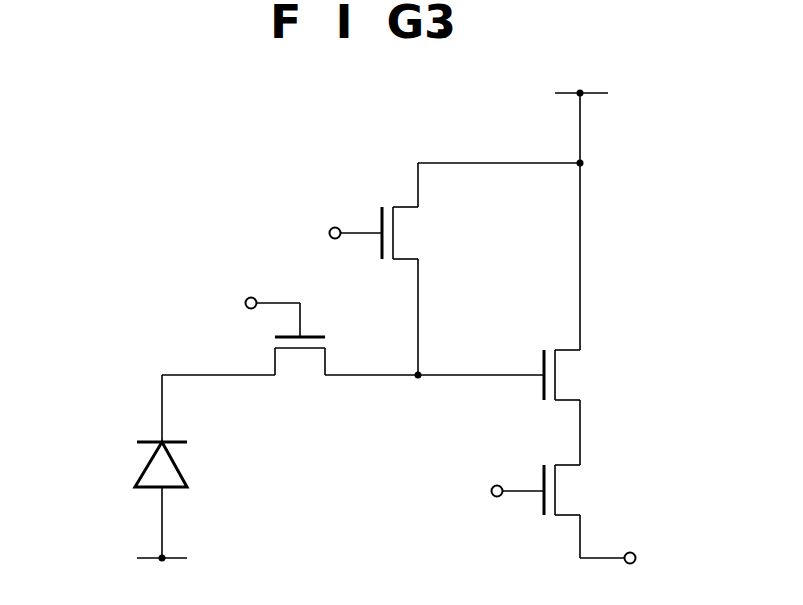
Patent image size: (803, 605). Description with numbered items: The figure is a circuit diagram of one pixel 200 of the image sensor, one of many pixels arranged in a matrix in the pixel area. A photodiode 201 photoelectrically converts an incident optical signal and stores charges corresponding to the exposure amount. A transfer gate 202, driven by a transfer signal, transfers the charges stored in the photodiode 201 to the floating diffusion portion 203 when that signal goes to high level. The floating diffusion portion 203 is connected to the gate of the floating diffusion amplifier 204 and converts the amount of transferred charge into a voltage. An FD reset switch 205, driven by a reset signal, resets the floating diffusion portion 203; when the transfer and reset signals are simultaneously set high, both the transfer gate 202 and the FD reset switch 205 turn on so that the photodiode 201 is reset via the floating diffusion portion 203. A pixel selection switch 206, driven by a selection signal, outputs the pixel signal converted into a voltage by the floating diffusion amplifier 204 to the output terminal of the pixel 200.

The pixel 200 is at (128, 121).
The photodiode 201 is at (134, 468).
The transfer gate 202 is at (269, 345).
The floating diffusion portion 203 is at (419, 376).
The floating diffusion amplifier 204 is at (587, 378).
The FD reset switch 205 is at (425, 237).
The pixel selection switch 206 is at (587, 492).